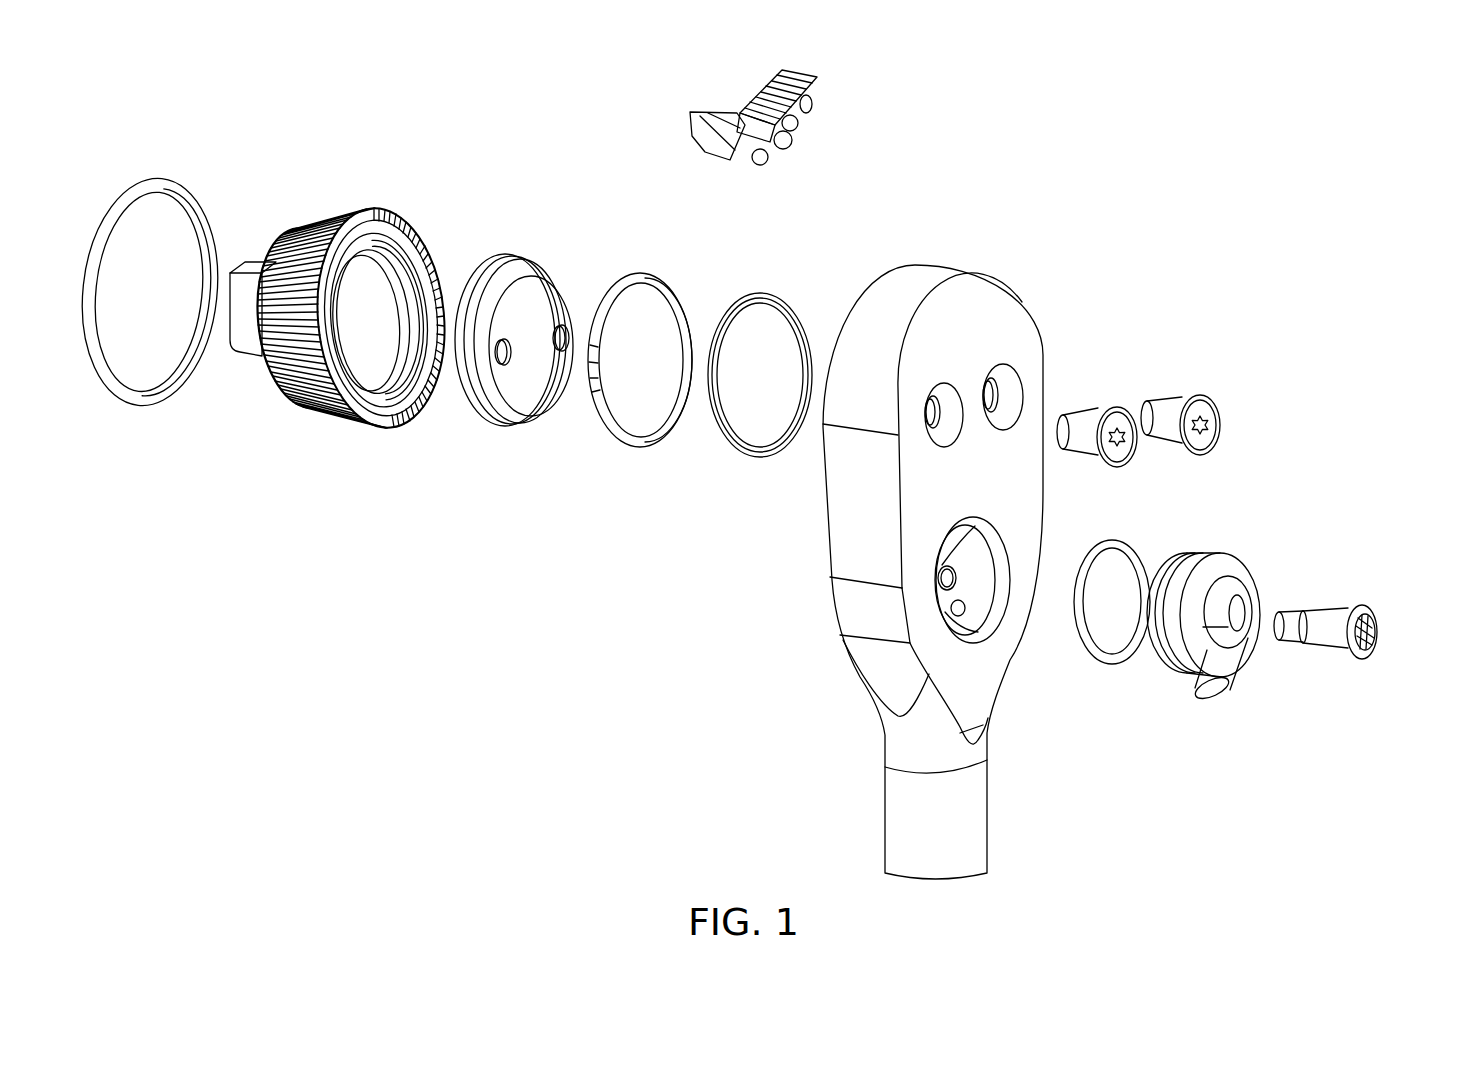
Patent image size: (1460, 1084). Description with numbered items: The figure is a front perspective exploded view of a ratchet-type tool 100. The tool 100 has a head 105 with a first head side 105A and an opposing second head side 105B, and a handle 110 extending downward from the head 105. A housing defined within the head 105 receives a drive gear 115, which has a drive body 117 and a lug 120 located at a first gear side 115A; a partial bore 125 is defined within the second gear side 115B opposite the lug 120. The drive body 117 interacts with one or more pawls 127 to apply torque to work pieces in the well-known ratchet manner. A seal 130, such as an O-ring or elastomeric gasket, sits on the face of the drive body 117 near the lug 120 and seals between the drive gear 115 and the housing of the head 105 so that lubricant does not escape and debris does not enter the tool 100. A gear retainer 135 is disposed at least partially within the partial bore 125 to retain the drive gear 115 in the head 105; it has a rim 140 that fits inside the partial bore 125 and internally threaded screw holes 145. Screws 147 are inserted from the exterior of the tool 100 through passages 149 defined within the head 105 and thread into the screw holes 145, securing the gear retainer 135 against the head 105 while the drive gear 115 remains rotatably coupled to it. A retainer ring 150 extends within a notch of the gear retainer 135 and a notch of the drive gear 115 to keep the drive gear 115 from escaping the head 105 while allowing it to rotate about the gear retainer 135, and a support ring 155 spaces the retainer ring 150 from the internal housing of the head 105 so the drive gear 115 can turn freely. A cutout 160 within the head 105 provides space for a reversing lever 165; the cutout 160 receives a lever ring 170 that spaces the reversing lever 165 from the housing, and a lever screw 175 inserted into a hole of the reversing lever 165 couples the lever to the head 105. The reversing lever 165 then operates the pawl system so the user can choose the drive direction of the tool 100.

The tool 100 is at (761, 472).
The head 105 is at (919, 531).
The first head side 105A is at (808, 551).
The second head side 105B is at (1034, 572).
The handle 110 is at (894, 817).
The drive gear 115 is at (344, 325).
The first gear side 115A is at (276, 326).
The second gear side 115B is at (424, 313).
The drive body 117 is at (381, 264).
The lug 120 is at (243, 255).
The partial bore 125 is at (371, 377).
The pawl 127 is at (800, 117).
The seal 130 is at (149, 242).
The gear retainer 135 is at (513, 345).
The rim 140 is at (540, 285).
The screw holes 145 is at (553, 421).
The screws 147 is at (1152, 386).
The passages 149 is at (941, 315).
The retainer ring 150 is at (640, 304).
The support ring 155 is at (760, 416).
The cutout 160 is at (859, 655).
The reversing lever 165 is at (1241, 616).
The lever ring 170 is at (1109, 651).
The lever screw 175 is at (1363, 640).